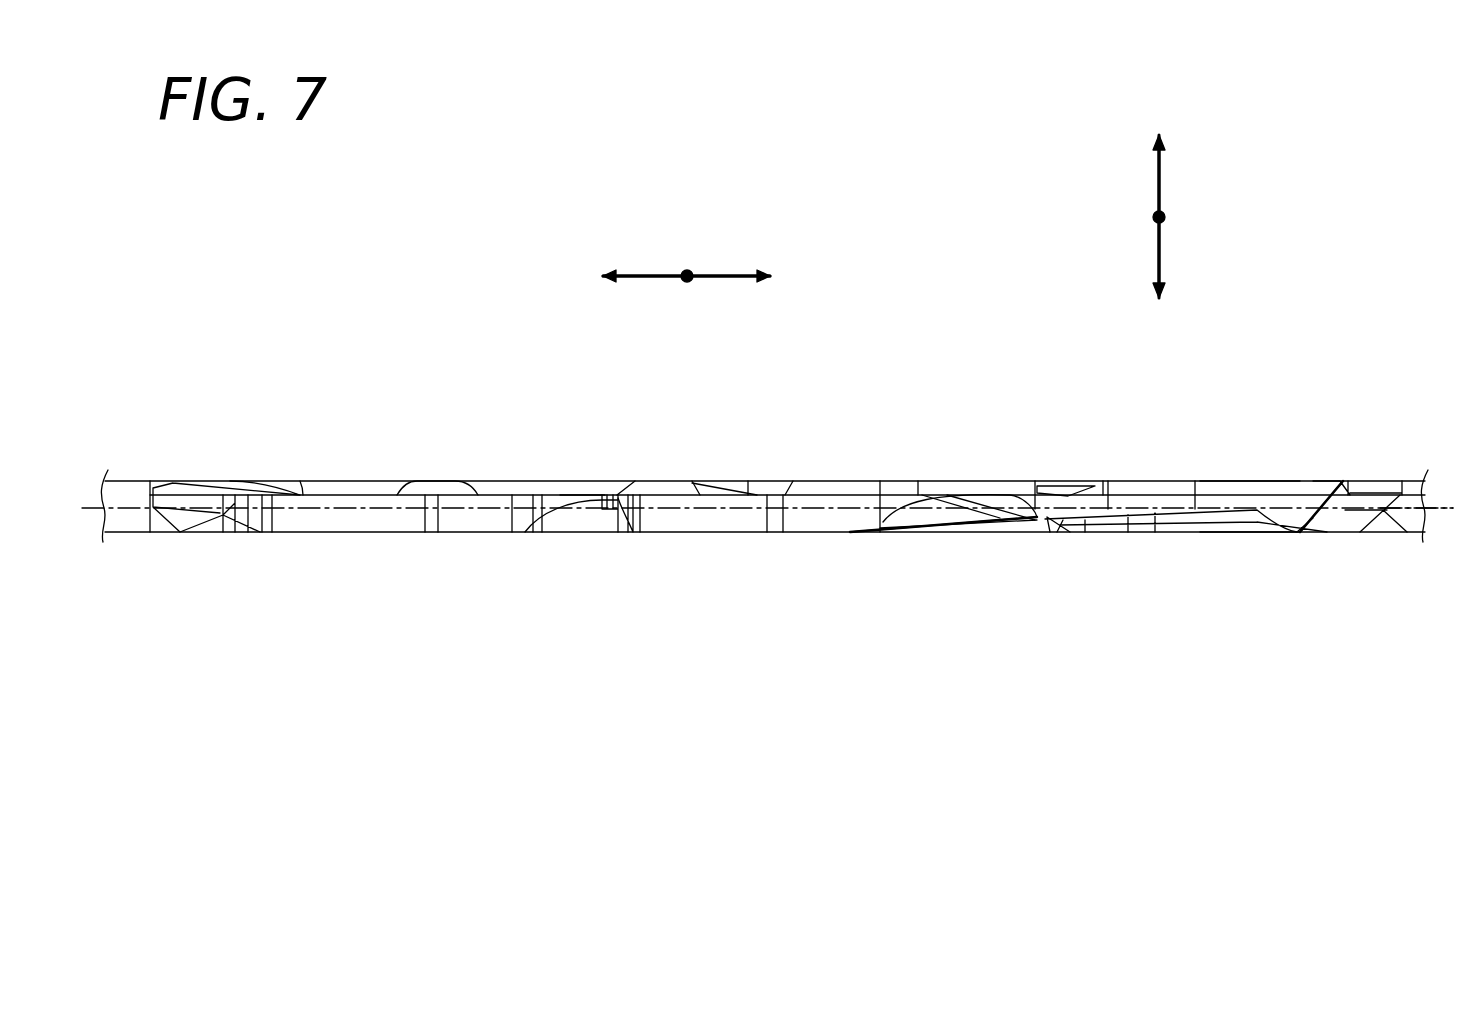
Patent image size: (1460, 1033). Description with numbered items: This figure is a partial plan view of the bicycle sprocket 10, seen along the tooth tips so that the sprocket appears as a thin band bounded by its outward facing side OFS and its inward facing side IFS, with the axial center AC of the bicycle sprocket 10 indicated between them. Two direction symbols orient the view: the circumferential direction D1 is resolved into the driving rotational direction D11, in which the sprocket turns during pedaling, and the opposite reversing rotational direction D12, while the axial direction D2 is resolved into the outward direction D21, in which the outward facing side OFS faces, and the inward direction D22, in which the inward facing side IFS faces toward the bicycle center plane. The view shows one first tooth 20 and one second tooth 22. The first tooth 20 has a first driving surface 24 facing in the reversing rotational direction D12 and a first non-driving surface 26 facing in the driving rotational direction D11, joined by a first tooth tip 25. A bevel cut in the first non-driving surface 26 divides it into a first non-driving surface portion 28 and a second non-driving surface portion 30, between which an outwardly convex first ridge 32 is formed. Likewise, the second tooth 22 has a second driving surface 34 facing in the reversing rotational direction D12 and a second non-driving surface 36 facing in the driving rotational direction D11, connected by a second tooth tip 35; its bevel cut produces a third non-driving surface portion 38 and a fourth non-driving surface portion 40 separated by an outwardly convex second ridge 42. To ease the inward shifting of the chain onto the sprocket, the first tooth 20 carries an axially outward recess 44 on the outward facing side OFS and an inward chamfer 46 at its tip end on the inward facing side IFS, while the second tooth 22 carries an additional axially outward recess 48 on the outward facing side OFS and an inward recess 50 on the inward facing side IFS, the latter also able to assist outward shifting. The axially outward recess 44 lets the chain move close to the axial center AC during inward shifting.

The bicycle sprocket 10 is at (739, 719).
The first tooth 20 is at (567, 601).
The second tooth 22 is at (958, 594).
The first driving surface 24 is at (633, 505).
The first tooth tip 25 is at (618, 503).
The first non-driving surface 26 is at (582, 632).
The first non-driving surface portion 28 is at (573, 507).
The second non-driving surface portion 30 is at (518, 518).
The first ridge 32 is at (537, 513).
The second driving surface 34 is at (1055, 595).
The second tooth tip 35 is at (1025, 492).
The second non-driving surface 36 is at (960, 632).
The third non-driving surface portion 38 is at (977, 487).
The fourth non-driving surface portion 40 is at (897, 497).
The second ridge 42 is at (928, 488).
The axially outward recess 44 is at (655, 493).
The inward chamfer 46 is at (588, 497).
The additional axially outward recess 48 is at (1053, 492).
The inward recess 50 is at (1085, 520).
The outward facing side OFS is at (1247, 481).
The inward facing side IFS is at (1255, 532).
The axial center AC is at (1442, 510).
The circumferential direction D1 is at (757, 196).
The driving rotational direction D11 is at (633, 276).
The reversing rotational direction D12 is at (714, 276).
The axial direction D2 is at (1257, 163).
The outward direction D21 is at (1159, 163).
The inward direction D22 is at (1159, 243).